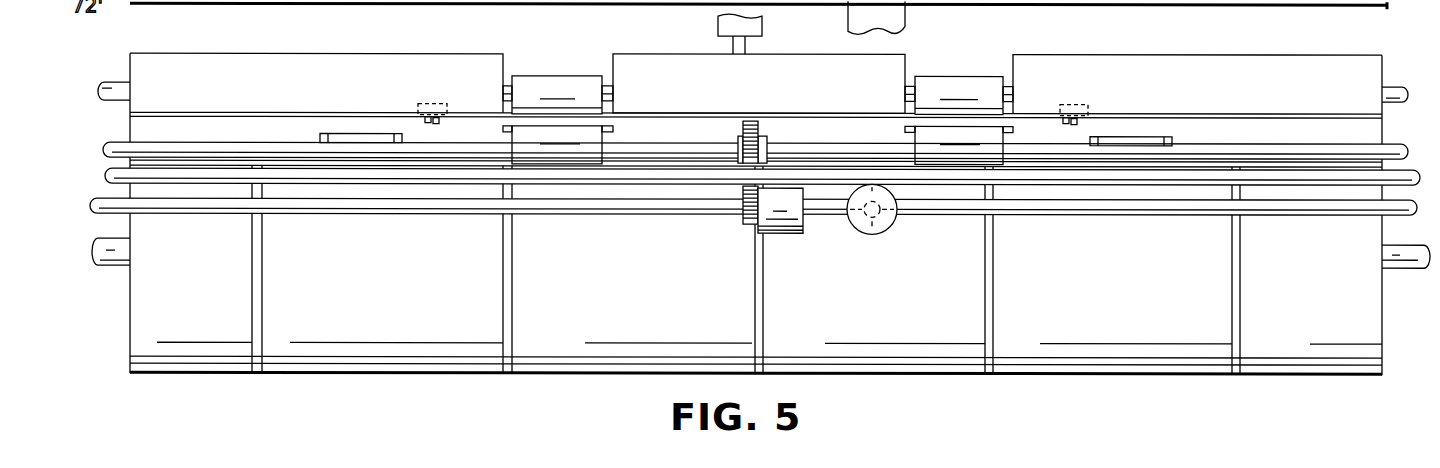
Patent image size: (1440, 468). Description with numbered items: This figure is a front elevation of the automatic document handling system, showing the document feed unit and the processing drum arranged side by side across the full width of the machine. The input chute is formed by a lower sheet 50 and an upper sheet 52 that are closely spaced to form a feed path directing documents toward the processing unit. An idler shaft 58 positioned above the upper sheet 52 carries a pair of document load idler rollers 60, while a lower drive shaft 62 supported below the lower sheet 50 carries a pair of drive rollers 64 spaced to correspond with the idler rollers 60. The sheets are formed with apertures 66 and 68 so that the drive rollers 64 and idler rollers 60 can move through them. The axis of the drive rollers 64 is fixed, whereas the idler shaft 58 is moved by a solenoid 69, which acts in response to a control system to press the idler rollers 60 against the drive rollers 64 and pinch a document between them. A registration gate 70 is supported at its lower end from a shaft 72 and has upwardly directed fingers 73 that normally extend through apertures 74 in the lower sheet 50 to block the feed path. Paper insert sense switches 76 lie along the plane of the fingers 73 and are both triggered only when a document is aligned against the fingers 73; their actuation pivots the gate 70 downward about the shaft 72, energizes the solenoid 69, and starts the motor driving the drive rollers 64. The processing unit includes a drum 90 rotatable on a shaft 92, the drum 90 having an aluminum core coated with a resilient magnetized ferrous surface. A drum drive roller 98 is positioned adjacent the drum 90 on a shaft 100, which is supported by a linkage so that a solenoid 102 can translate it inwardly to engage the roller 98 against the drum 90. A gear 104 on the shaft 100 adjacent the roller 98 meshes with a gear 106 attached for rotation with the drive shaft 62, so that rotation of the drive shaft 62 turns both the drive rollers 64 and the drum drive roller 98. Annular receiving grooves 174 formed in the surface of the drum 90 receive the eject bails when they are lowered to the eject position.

The lower sheet 50 is at (287, 127).
The upper sheet 52 is at (335, 65).
The idler shaft 58 is at (115, 88).
The document load idler rollers 60 is at (570, 80).
The lower drive shaft 62 is at (423, 148).
The drive rollers 64 is at (568, 147).
The apertures 66 is at (503, 128).
The apertures 68 is at (508, 62).
The solenoid 69 is at (723, 23).
The registration gate 70 is at (1337, 168).
The shaft 72 is at (1297, 180).
The fingers 73 is at (365, 138).
The apertures 74 is at (320, 133).
The paper insert sense switches 76 is at (418, 103).
The drum 90 is at (1128, 299).
The shaft 92 is at (1395, 268).
The drum drive roller 98 is at (786, 230).
The shaft 100 is at (1083, 207).
The solenoid 102 is at (880, 20).
The gear 104 is at (743, 218).
The gear 106 is at (743, 128).
The annular receiving grooves 174 is at (765, 320).